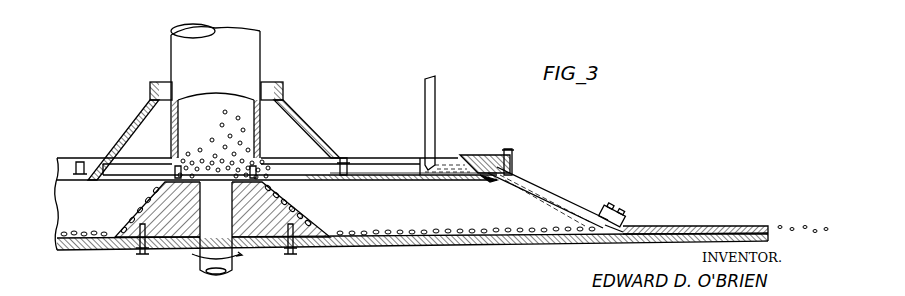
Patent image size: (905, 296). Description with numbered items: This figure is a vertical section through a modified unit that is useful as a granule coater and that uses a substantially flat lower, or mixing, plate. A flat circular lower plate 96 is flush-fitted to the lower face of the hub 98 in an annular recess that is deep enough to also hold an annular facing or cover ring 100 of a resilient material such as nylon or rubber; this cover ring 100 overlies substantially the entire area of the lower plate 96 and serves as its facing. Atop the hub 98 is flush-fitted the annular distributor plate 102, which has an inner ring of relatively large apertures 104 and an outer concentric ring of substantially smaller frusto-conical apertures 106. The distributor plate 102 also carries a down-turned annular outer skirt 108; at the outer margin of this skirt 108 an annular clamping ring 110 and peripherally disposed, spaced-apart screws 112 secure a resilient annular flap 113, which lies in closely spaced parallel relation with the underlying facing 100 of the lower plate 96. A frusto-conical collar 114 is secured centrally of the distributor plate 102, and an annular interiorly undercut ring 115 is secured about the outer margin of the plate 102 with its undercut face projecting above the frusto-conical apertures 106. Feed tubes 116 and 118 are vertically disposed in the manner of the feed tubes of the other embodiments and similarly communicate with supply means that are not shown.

The lower plate 96 is at (377, 249).
The hub 98 is at (248, 238).
The cover ring 100 is at (354, 233).
The distributor plate 102 is at (413, 186).
The apertures 104 is at (305, 178).
The frusto-conical apertures 106 is at (487, 180).
The outer skirt 108 is at (542, 190).
The clamping ring 110 is at (626, 222).
The screws 112 is at (620, 211).
The resilient annular flap 113 is at (723, 225).
The frusto-conical collar 114 is at (293, 108).
The interiorly undercut ring 115 is at (484, 153).
The feed tube 116 is at (253, 48).
The feed tube 118 is at (437, 95).